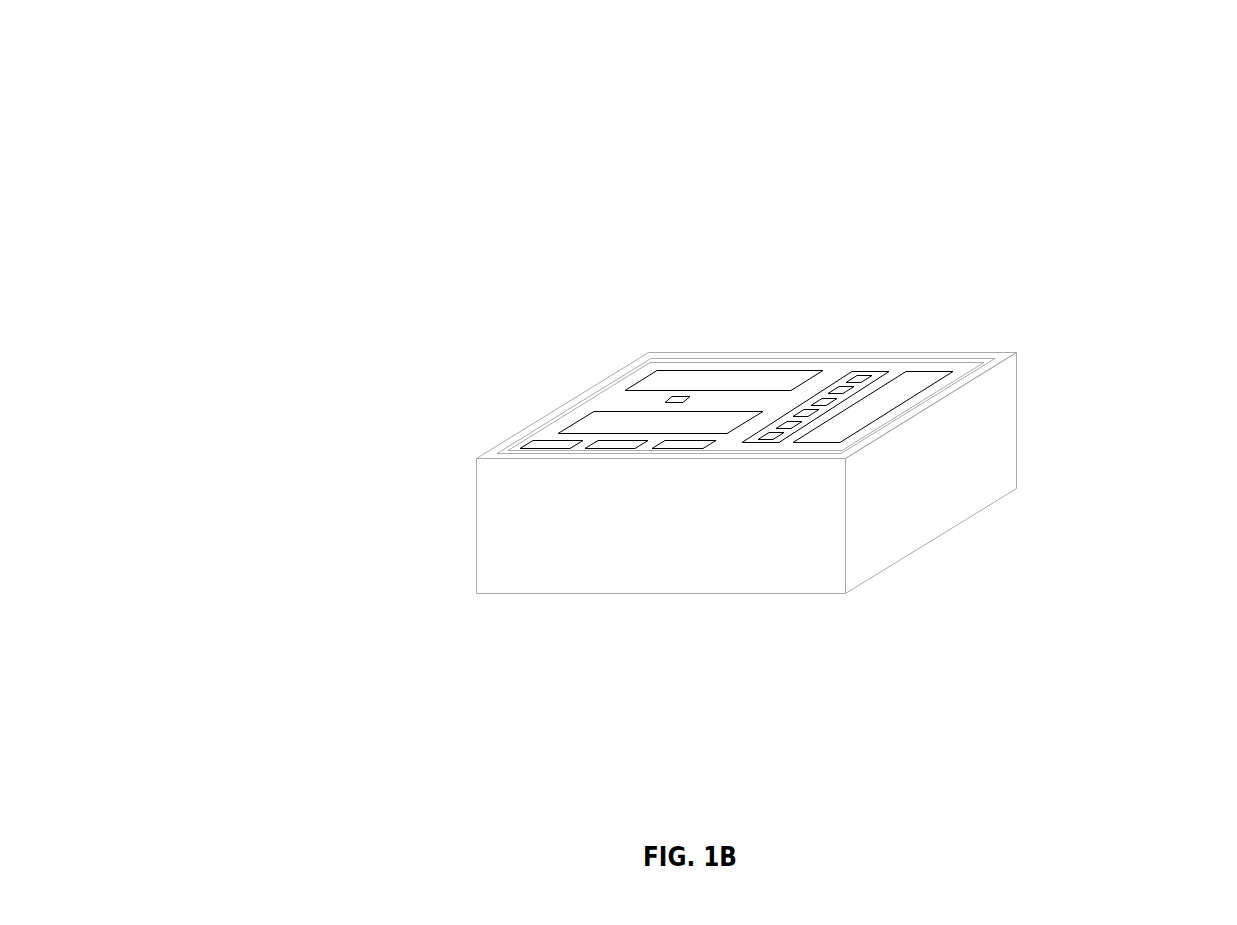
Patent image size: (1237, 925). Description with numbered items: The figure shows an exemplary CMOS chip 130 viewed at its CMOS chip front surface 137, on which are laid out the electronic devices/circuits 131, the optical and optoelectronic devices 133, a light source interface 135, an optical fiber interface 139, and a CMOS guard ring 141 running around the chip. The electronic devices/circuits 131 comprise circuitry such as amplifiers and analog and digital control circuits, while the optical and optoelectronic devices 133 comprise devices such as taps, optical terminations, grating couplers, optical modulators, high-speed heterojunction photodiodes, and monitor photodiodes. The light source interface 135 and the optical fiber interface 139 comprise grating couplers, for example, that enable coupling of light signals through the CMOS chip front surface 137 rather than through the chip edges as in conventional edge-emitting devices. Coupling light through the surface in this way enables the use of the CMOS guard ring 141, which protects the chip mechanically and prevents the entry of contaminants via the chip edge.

The CMOS chip 130 is at (338, 100).
The electronic devices/circuits 131 is at (573, 642).
The optical and optoelectronic devices 133 is at (652, 374).
The light source interface 135 is at (678, 395).
The CMOS chip front surface 137 is at (833, 366).
The optical fiber interface 139 is at (862, 368).
The CMOS guard ring 141 is at (1005, 379).